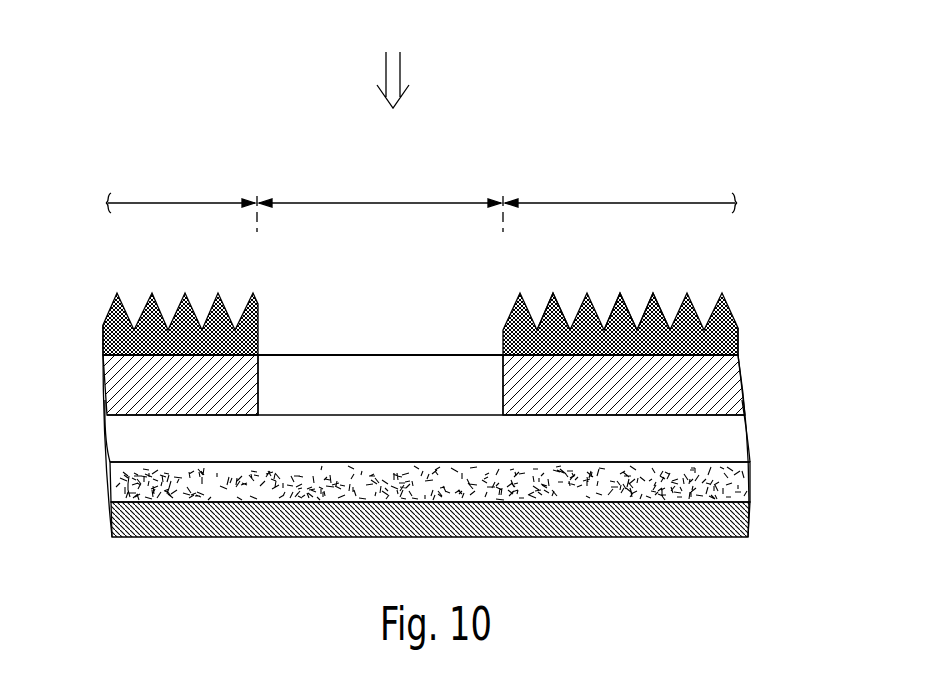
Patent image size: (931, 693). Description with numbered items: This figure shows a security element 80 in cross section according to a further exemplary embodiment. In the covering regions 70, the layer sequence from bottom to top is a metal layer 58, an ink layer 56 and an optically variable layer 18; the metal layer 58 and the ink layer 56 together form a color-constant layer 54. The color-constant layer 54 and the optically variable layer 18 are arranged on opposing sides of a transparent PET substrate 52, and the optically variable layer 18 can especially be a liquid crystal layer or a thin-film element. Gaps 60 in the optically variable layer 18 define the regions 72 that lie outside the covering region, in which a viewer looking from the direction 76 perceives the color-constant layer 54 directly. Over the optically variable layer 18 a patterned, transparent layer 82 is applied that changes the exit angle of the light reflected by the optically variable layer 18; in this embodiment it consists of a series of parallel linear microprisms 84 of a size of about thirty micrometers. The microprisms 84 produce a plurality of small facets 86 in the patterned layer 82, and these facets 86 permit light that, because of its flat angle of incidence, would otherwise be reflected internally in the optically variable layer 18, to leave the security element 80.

The direction 76 is at (400, 63).
The covering regions 70 is at (190, 200).
The regions outside the covering region 72 is at (390, 200).
The security element 80 is at (429, 379).
The patterned transparent layer 82 is at (738, 345).
The microprisms 84 is at (660, 305).
The facets 86 is at (611, 294).
The optically variable layer 18 is at (722, 392).
The gaps 60 is at (379, 370).
The transparent PET substrate 52 is at (733, 446).
The color-constant layer 54 is at (484, 500).
The ink layer 56 is at (745, 486).
The metal layer 58 is at (459, 520).